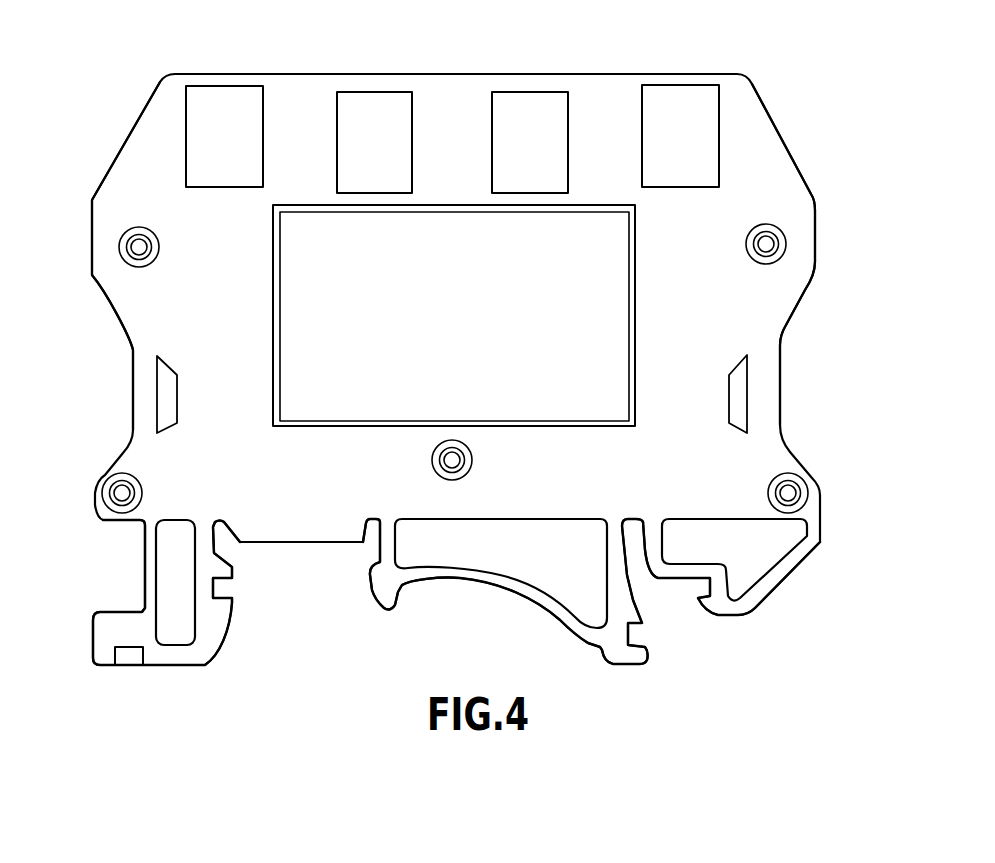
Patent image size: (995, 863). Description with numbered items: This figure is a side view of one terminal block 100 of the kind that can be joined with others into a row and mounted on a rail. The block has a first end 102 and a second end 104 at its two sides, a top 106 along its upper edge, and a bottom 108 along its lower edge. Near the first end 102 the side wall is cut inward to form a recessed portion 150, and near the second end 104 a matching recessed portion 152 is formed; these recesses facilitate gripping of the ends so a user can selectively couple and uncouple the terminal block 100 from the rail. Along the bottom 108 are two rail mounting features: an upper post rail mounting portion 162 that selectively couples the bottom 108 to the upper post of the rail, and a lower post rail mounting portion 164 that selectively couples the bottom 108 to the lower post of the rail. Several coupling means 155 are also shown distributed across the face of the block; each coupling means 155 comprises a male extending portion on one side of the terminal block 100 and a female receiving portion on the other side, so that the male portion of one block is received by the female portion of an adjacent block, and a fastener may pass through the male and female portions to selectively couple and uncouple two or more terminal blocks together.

The terminal block 100 is at (602, 40).
The first end 102 is at (817, 233).
The second end 104 is at (90, 233).
The top 106 is at (277, 55).
The bottom 108 is at (426, 627).
The recessed portion 150 is at (802, 325).
The recessed portion 152 is at (102, 370).
The coupling means 155 is at (138, 227).
The upper post rail mounting portion 162 is at (670, 646).
The lower post rail mounting portion 164 is at (245, 648).